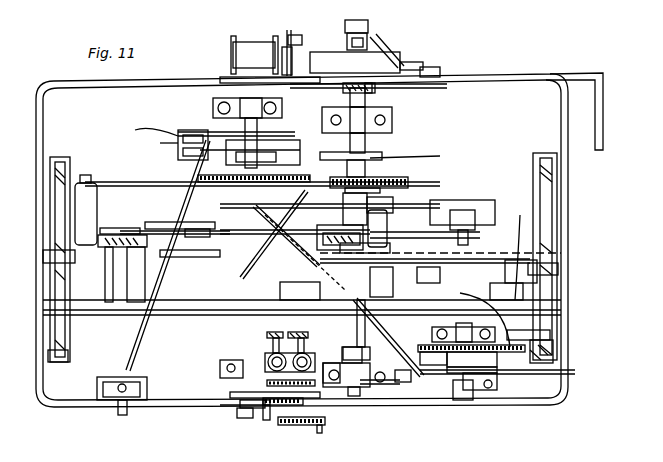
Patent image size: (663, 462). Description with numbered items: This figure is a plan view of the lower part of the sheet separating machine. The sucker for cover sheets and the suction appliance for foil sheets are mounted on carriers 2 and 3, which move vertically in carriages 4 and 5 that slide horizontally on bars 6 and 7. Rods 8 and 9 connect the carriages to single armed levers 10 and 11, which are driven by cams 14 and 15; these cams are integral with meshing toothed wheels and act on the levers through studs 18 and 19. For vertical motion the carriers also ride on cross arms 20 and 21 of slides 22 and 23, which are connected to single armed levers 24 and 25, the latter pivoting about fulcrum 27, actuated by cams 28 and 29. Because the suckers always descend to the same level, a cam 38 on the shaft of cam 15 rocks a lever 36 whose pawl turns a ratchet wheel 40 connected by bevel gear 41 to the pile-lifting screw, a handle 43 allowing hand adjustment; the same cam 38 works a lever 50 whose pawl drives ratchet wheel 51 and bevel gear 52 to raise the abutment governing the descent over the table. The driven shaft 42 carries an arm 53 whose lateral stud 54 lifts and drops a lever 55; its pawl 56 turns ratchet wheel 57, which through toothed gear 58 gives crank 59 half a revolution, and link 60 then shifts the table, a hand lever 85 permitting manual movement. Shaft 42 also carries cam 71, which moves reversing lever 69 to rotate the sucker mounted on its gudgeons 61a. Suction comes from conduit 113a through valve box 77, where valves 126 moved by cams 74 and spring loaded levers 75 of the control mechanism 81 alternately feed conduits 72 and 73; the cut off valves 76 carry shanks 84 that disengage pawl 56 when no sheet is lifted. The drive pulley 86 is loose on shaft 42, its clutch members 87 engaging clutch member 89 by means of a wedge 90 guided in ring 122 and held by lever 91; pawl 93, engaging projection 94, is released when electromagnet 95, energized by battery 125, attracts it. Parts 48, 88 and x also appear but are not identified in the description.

The carrier 2 is at (119, 247).
The carrier 3 is at (310, 260).
The carriage 4 is at (140, 268).
The carriage 5 is at (392, 250).
The bar 6 is at (185, 257).
The bar 7 is at (185, 312).
The rod 8 is at (114, 181).
The rod 9 is at (290, 217).
The single armed lever 10 is at (388, 220).
The single armed lever 11 is at (190, 230).
The cam 14 is at (410, 180).
The cam 15 is at (198, 176).
The stud 18 is at (393, 204).
The stud 19 is at (250, 205).
The cross arm 20 is at (118, 228).
The cross arm 21 is at (475, 258).
The vertically movable slide 22 is at (160, 230).
The vertically movable slide 23 is at (505, 270).
The single armed lever 24 is at (245, 275).
The single armed lever 25 is at (425, 284).
The fulcrum 27 is at (280, 288).
The cam 28 is at (343, 228).
The cam 29 is at (381, 287).
The lever 36 is at (222, 382).
The cam 38 is at (230, 400).
The ratchet wheel 40 is at (305, 398).
The bevel gear 41 is at (268, 358).
The driven shaft 42 is at (357, 327).
The handle 43 is at (267, 420).
The block 48 is at (245, 418).
The lever 50 is at (240, 410).
The ratchet wheel 51 is at (303, 425).
The bevel gear 52 is at (308, 355).
The arm 53 is at (385, 348).
The lateral stud 54 is at (380, 382).
The lever 55 is at (376, 384).
The pawl 56 is at (401, 382).
The ratchet wheel 57 is at (497, 380).
The toothed gear 58 is at (478, 317).
The crank 59 is at (545, 320).
The link 60 is at (522, 247).
The gudgeons 61a is at (503, 283).
The reversing lever 69 is at (414, 149).
The cam 71 is at (383, 153).
The suction conduit 72 is at (138, 337).
The suction conduit 73 is at (245, 175).
The cams 74 is at (275, 142).
The spring loaded levers 75 is at (285, 132).
The cut off valves 76 is at (150, 380).
The valve box 77 is at (213, 108).
The control mechanism 81 is at (258, 160).
The shank 84 is at (468, 390).
The hand lever 85 is at (550, 374).
The pulley 86 is at (415, 63).
The clutch members 87 is at (392, 58).
The coupling 88 is at (343, 90).
The clutch member 89 is at (375, 90).
The wedge piece 90 is at (366, 42).
The lever 91 is at (518, 80).
The pawl 93 is at (292, 44).
The projection 94 is at (305, 40).
The electromagnet 95 is at (248, 50).
The suction conduit 113a is at (135, 130).
The ring 122 is at (368, 14).
The battery 125 is at (362, 56).
The valves 126 is at (180, 130).
The pivot x is at (158, 141).